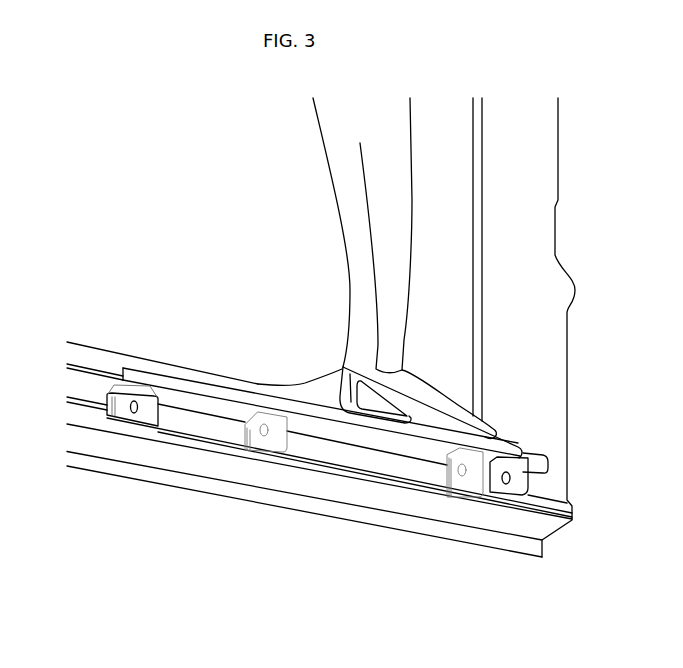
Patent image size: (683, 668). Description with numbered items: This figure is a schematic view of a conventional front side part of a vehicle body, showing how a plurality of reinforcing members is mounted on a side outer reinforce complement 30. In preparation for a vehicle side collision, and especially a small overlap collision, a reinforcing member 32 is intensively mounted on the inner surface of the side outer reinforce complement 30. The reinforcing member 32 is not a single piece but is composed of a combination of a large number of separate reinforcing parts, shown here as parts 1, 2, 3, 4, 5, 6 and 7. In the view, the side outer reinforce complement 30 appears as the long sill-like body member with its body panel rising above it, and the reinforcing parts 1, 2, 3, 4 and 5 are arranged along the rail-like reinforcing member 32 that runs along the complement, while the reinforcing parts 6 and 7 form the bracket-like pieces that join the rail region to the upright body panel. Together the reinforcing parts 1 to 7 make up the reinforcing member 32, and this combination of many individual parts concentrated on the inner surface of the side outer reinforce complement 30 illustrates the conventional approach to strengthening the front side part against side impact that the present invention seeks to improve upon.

The reinforcing part 1 is at (377, 462).
The reinforcing part 2 is at (455, 476).
The reinforcing part 3 is at (498, 487).
The reinforcing part 4 is at (252, 433).
The reinforcing part 5 is at (118, 410).
The reinforcing part 6 is at (347, 368).
The reinforcing part 7 is at (453, 417).
The side outer reinforce complement 30 is at (255, 503).
The reinforcing member 32 is at (333, 458).